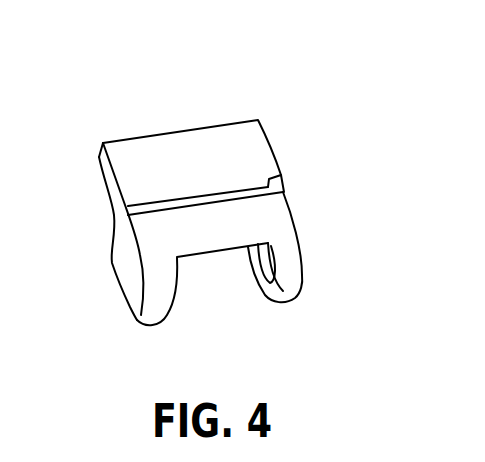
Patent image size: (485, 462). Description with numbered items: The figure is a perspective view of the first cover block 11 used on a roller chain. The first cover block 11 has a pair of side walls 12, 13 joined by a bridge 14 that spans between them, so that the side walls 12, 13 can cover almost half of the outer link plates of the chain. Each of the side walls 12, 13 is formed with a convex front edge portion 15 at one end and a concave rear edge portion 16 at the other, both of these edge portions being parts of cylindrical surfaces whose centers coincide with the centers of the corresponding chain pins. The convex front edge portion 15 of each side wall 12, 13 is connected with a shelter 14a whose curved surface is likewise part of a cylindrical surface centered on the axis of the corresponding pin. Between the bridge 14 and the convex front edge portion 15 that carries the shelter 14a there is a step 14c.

The first cover block 11 is at (178, 104).
The side wall 12 is at (298, 230).
The side wall 13 is at (129, 267).
The bridge 14 is at (225, 137).
The shelter 14a is at (217, 235).
The step 14c is at (273, 187).
The convex front edge portion 15 is at (165, 308).
The concave rear edge portion 16 is at (115, 216).